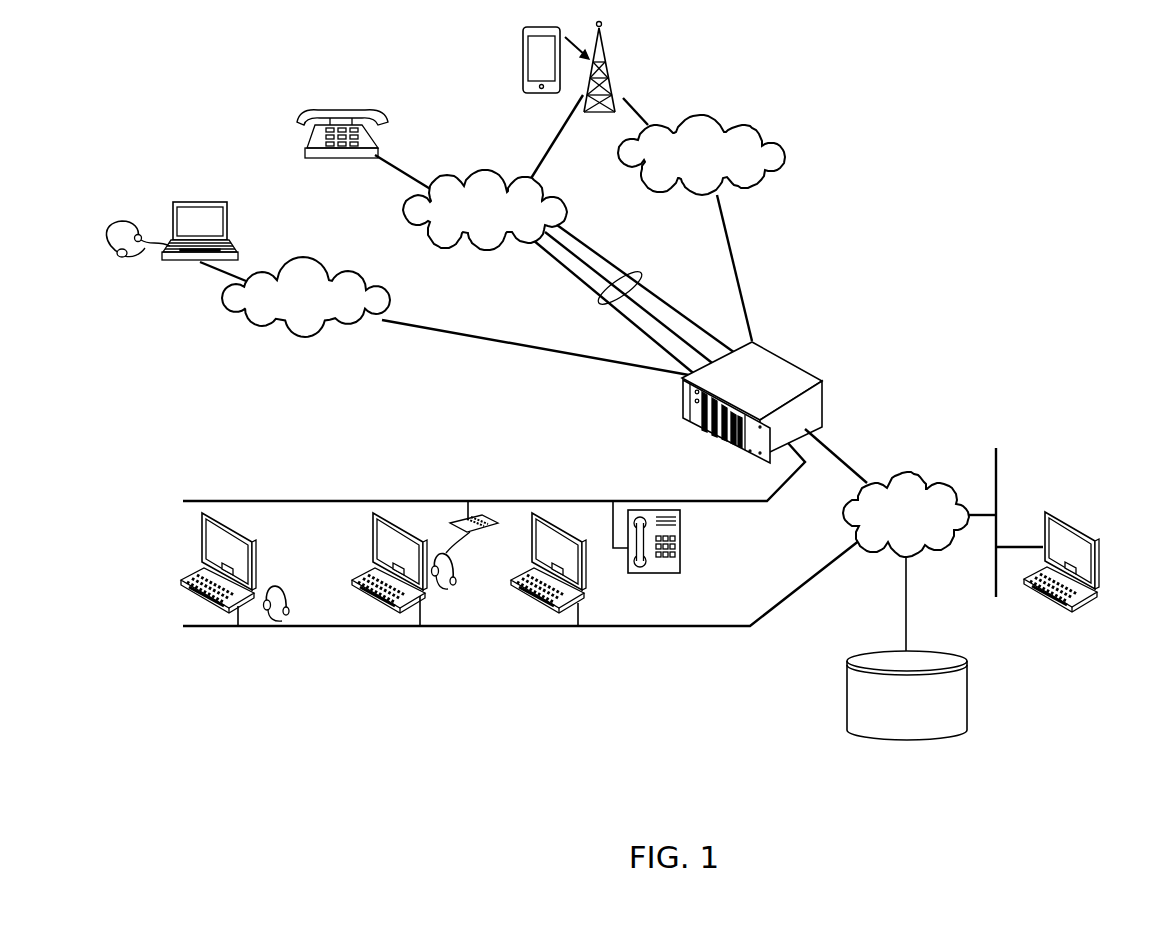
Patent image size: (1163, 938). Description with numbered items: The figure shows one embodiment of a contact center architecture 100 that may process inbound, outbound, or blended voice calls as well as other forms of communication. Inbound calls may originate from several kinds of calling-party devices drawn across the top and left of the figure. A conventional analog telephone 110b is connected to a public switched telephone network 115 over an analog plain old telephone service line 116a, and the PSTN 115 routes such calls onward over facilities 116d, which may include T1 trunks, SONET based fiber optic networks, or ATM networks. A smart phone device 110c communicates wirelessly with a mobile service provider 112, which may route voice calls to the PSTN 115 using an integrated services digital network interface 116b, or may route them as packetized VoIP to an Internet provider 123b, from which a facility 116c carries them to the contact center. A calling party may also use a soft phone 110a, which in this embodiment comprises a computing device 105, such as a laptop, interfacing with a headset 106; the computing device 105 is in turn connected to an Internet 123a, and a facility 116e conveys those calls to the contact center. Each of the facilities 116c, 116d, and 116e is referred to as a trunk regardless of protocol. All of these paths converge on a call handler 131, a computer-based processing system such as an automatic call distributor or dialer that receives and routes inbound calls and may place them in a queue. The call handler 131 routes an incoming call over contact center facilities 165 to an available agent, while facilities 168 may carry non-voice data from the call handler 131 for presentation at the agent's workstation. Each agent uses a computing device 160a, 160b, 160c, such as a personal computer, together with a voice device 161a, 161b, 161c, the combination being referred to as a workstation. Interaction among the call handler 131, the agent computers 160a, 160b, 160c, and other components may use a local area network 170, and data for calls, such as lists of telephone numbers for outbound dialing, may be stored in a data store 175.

The contact center architecture 100 is at (910, 146).
The computing device 105 is at (171, 230).
The headset 106 is at (122, 259).
The soft phone 110a is at (204, 186).
The conventional analog telephone 110b is at (378, 147).
The smart phone device 110c is at (523, 62).
The mobile service provider 112 is at (612, 78).
The public switched telephone network 115 is at (473, 229).
The analog plain old telephone service line 116a is at (409, 175).
The integrated services digital network interface 116b is at (565, 126).
The facility 116c is at (733, 270).
The facilities 116d is at (598, 302).
The facility 116e is at (457, 334).
The Internet 123a is at (289, 318).
The Internet provider 123b is at (687, 175).
The call handler 131 is at (770, 408).
The computing device 160a is at (258, 559).
The computing device 160b is at (427, 553).
The computing device 160c is at (584, 556).
The voice device 161a is at (291, 601).
The voice device 161b is at (458, 566).
The voice device 161c is at (666, 575).
The contact center facilities 165 is at (712, 497).
The facilities 168 is at (720, 628).
The local area network 170 is at (847, 535).
The data store 175 is at (895, 721).